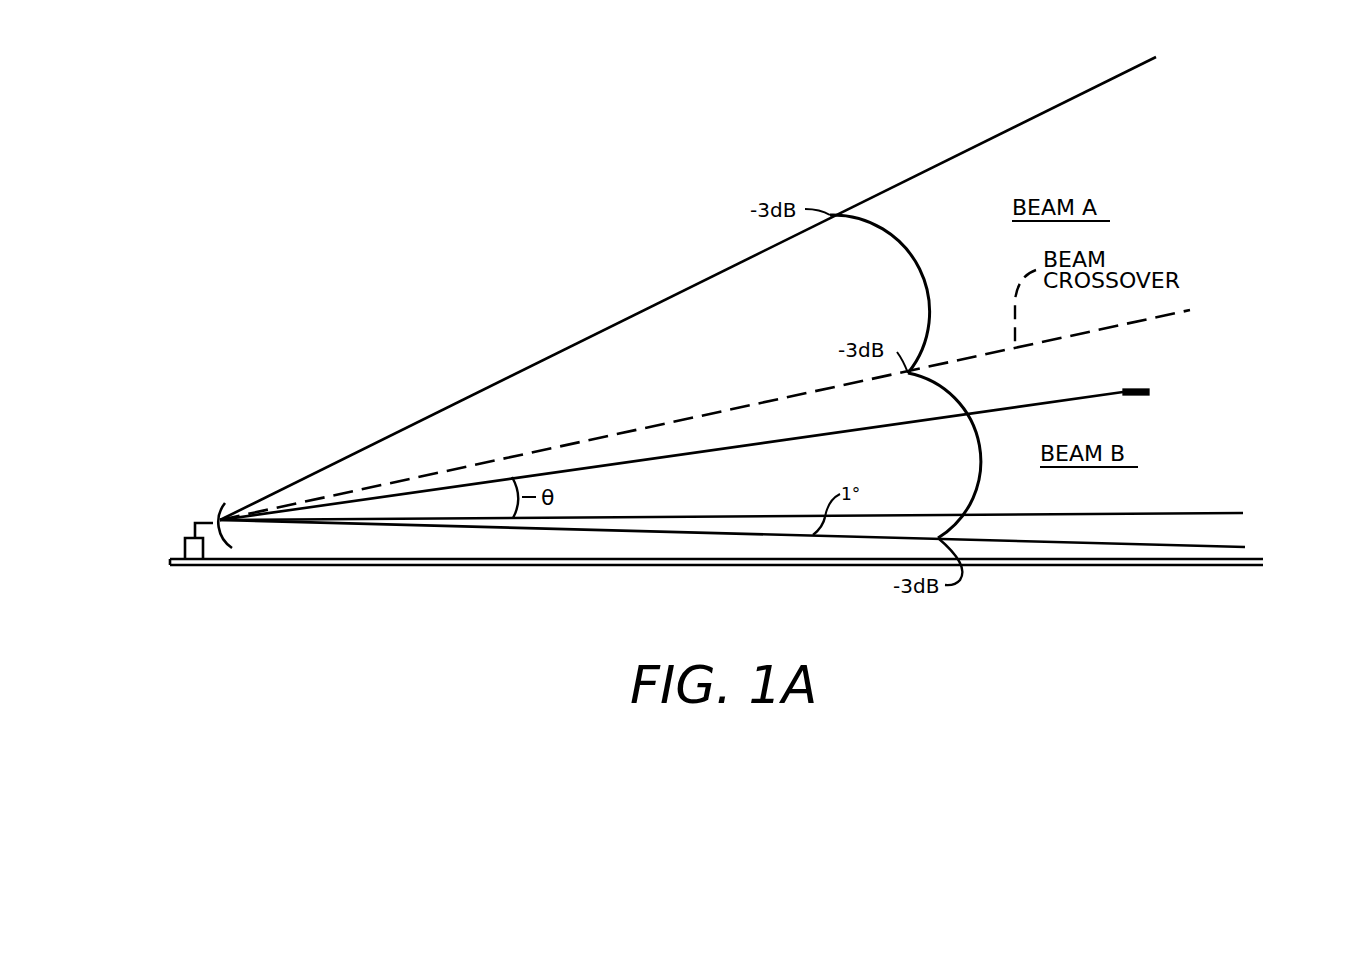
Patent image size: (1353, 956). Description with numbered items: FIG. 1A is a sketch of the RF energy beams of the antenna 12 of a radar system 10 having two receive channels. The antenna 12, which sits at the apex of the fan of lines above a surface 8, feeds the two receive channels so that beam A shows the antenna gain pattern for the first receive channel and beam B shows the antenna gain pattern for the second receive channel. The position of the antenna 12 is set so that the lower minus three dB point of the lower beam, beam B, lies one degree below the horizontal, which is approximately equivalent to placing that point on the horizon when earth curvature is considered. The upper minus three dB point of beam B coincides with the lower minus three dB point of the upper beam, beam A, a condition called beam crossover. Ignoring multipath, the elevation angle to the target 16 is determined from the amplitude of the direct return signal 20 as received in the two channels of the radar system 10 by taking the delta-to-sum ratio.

The surface 8 is at (1262, 559).
The radar system 10 is at (185, 548).
The antenna 12 is at (224, 505).
The target 16 is at (1135, 386).
The direct return signal 20 is at (820, 437).